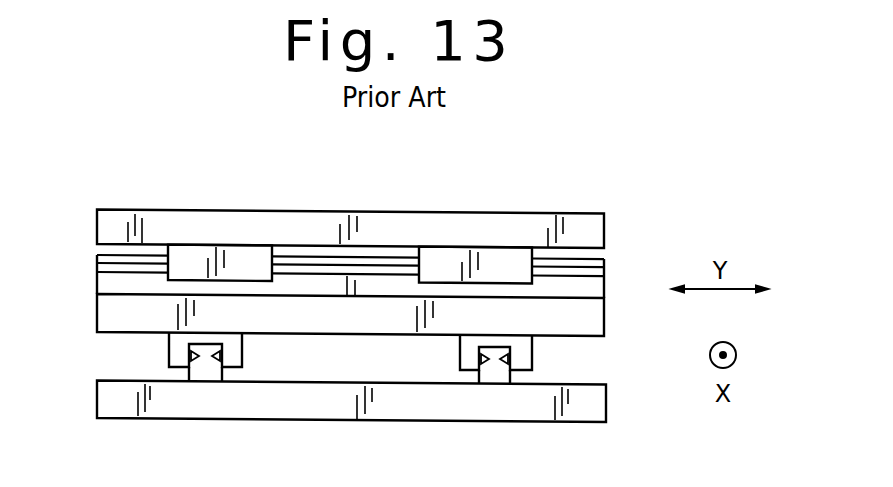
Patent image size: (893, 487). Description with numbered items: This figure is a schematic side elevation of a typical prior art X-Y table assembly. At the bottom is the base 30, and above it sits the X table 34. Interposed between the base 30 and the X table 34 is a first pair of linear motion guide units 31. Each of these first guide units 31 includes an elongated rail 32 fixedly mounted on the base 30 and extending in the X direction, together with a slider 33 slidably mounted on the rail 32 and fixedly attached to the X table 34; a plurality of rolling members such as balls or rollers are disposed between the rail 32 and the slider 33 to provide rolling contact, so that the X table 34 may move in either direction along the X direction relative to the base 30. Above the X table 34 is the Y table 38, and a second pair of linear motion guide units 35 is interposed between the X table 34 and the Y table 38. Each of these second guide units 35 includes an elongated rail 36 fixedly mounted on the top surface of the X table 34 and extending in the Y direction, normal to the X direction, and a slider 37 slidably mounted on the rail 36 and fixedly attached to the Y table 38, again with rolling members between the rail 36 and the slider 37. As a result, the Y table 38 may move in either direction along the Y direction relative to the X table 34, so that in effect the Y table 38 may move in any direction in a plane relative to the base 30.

The base 30 is at (100, 398).
The first pair of linear motion guide units 31 is at (167, 352).
The elongated rail 32 is at (203, 373).
The slider 33 is at (232, 353).
The X table 34 is at (105, 312).
The second pair of linear motion guide units 35 is at (605, 280).
The elongated rail 36 is at (148, 275).
The slider 37 is at (237, 253).
The Y table 38 is at (318, 220).